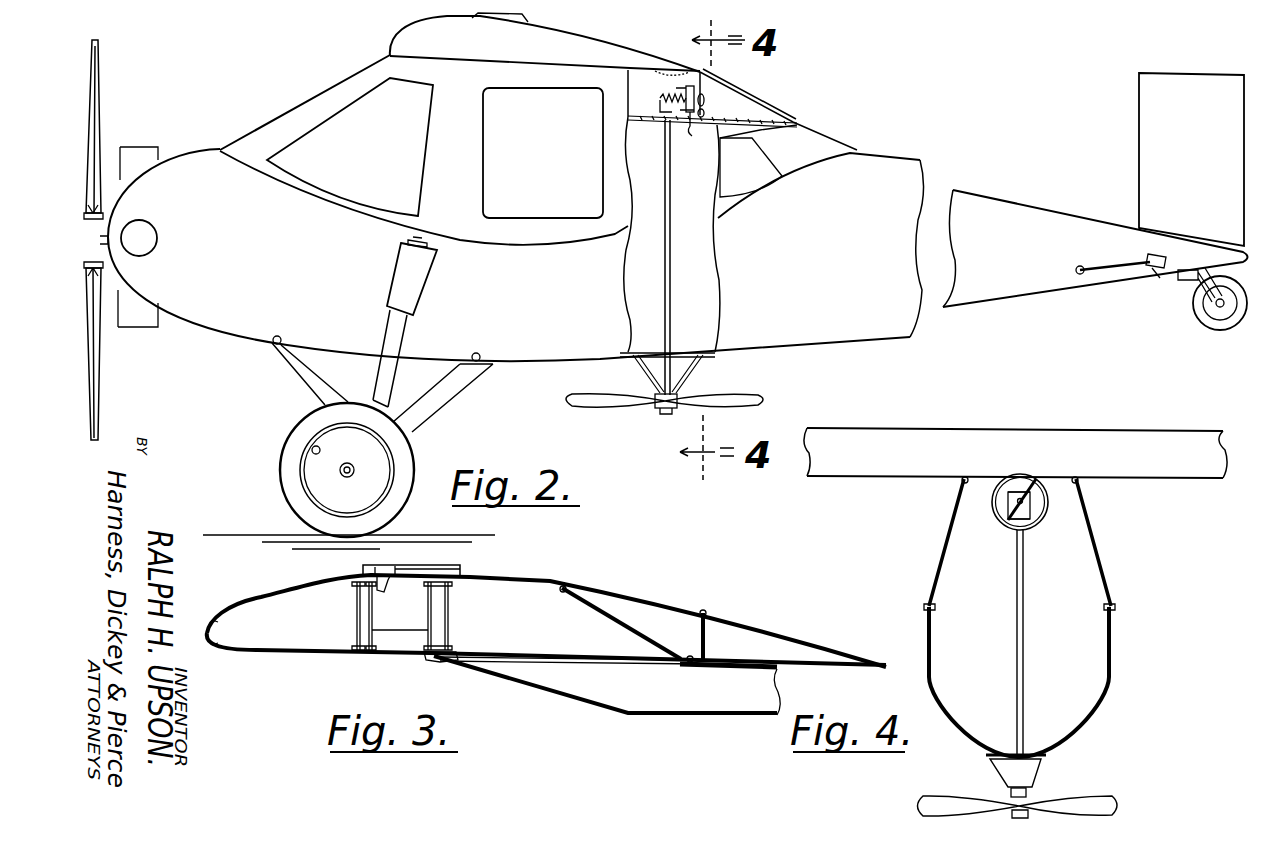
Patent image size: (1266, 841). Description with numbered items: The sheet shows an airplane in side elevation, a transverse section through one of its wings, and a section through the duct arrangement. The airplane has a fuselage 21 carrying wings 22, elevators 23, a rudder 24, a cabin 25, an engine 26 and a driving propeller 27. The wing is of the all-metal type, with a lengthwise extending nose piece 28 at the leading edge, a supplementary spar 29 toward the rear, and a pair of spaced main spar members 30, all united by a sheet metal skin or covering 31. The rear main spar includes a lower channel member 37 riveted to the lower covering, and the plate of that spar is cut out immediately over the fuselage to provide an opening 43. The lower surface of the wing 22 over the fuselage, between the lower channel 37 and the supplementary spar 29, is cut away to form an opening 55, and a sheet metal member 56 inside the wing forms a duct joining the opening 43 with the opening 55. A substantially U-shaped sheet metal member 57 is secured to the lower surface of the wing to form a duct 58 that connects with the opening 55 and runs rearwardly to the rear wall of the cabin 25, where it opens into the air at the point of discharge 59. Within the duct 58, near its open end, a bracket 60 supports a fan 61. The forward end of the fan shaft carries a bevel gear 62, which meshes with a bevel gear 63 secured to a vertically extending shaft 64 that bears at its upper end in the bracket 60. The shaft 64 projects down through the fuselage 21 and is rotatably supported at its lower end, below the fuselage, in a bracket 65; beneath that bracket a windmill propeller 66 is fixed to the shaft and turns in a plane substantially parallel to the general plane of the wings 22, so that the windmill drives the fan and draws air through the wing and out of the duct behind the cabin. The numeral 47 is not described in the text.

In FIG. 2, the fuselage 21 is at (678, 239).
In FIG. 4, the fuselage 21 is at (1098, 726).
In FIG. 2, the wings 22 is at (545, 42).
In FIG. 3, the wings 22 is at (283, 590).
In FIG. 2, the elevators 23 is at (1142, 258).
In FIG. 2, the rudder 24 is at (1191, 159).
In FIG. 2, the cabin 25 is at (411, 136).
In FIG. 4, the cabin 25 is at (1096, 540).
In FIG. 2, the engine 26 is at (145, 158).
In FIG. 2, the driving propeller 27 is at (95, 106).
In FIG. 3, the nose piece 28 is at (216, 633).
In FIG. 3, the supplementary spar 29 is at (707, 648).
In FIG. 3, the main spar members 30 is at (428, 631).
In FIG. 3, the sheet metal skin or covering 31 is at (632, 595).
In FIG. 3, the lower channel member 37 is at (428, 660).
In FIG. 3, the opening 43 is at (448, 618).
In FIG. 3, the upright strut 47 is at (381, 616).
In FIG. 3, the opening 55 is at (560, 658).
In FIG. 3, the sheet metal member 56 is at (625, 631).
In FIG. 3, the sheet metal member 57 is at (560, 702).
In FIG. 4, the sheet metal member 57 is at (1043, 515).
In FIG. 2, the duct 58 is at (626, 86).
In FIG. 3, the duct 58 is at (724, 682).
In FIG. 4, the duct 58 is at (1006, 498).
In FIG. 2, the point of discharge 59 is at (733, 98).
In FIG. 2, the bracket 60 is at (690, 124).
In FIG. 2, the fan 61 is at (705, 107).
In FIG. 2, the bevel gear 62 is at (684, 92).
In FIG. 2, the bevel gear 63 is at (660, 100).
In FIG. 2, the vertically extending shaft 64 is at (666, 139).
In FIG. 4, the vertically extending shaft 64 is at (1025, 594).
In FIG. 2, the bracket 65 is at (690, 382).
In FIG. 4, the bracket 65 is at (1030, 773).
In FIG. 2, the windmill propeller 66 is at (574, 402).
In FIG. 4, the windmill propeller 66 is at (1105, 806).